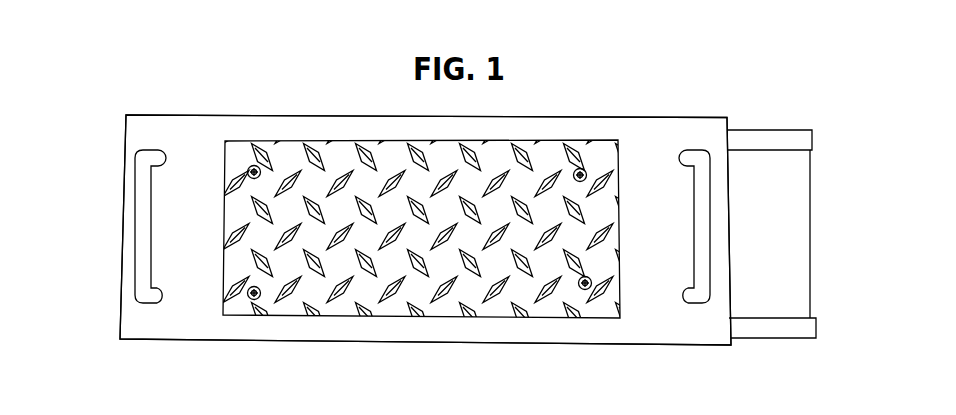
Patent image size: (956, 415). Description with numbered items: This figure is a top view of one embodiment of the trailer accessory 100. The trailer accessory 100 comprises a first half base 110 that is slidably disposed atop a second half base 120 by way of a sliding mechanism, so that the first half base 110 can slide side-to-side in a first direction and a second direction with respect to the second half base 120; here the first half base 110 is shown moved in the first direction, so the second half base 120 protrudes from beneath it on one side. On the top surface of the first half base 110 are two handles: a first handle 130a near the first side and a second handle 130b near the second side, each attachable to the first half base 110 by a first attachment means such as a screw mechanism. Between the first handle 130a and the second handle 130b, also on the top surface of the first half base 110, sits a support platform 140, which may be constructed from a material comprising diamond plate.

The trailer accessory 100 is at (97, 100).
The first half base 110 is at (123, 228).
The second half base 120 is at (810, 235).
The first handle 130a is at (163, 155).
The second handle 130b is at (689, 150).
The support platform 140 is at (597, 318).